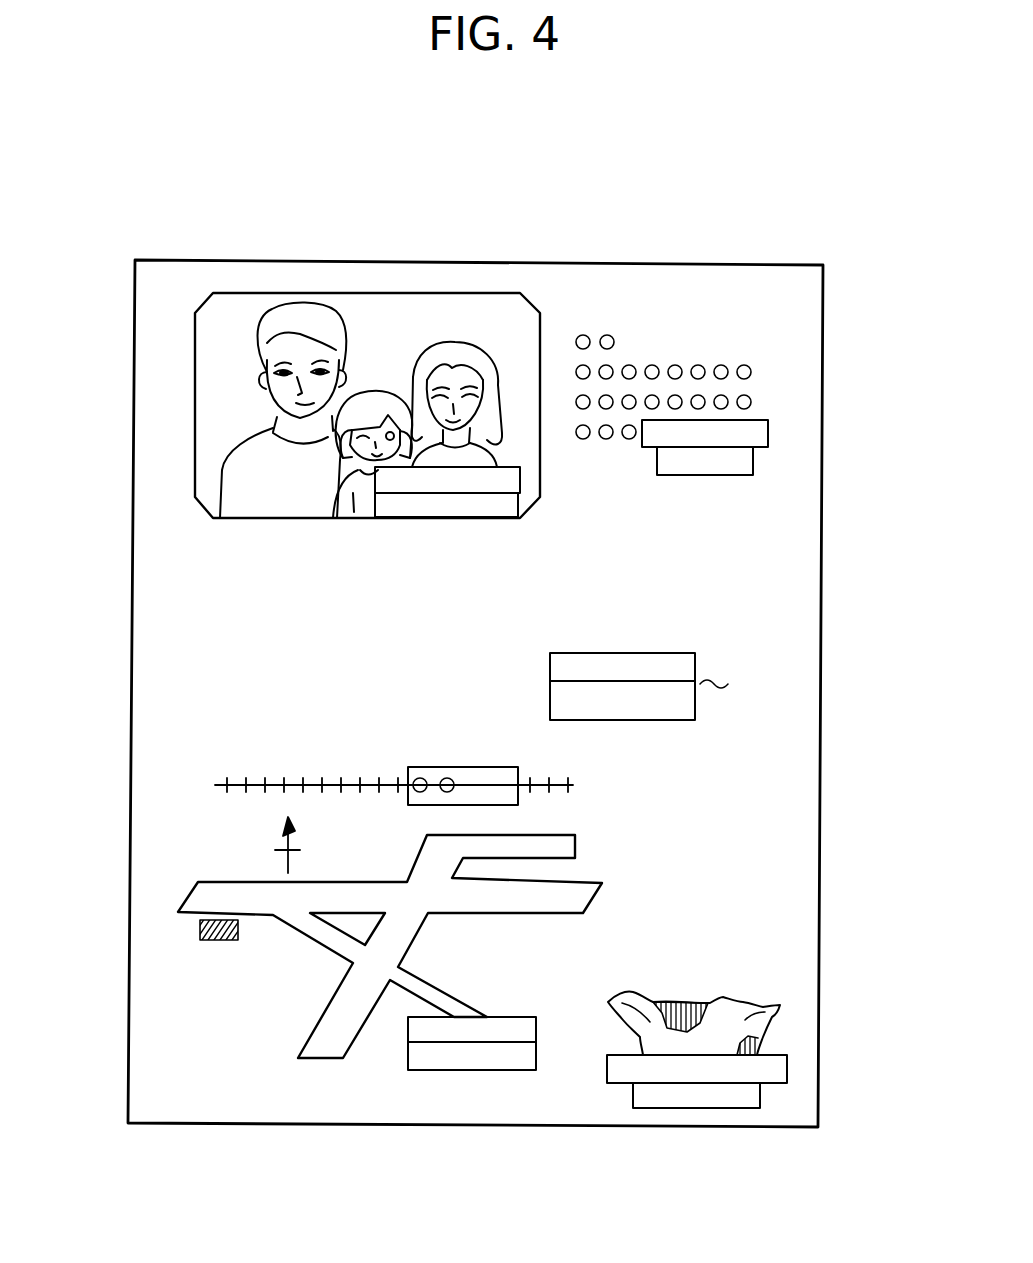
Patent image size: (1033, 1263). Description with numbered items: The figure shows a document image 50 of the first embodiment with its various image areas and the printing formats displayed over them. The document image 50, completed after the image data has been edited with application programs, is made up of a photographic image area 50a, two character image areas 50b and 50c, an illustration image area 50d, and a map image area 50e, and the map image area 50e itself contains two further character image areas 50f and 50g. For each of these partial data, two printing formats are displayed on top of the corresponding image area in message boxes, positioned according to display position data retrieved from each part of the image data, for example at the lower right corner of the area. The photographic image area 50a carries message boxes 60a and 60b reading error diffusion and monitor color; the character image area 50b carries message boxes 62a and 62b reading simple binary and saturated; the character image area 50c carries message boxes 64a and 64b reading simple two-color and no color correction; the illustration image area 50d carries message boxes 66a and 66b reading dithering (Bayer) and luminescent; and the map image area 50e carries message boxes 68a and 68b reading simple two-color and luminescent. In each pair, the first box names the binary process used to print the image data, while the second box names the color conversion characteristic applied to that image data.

The document image 50 is at (808, 262).
The photographic image area 50a is at (435, 292).
The character image area 50b is at (773, 328).
The character image area 50c is at (731, 718).
The illustration image area 50d is at (772, 1049).
The map image area 50e is at (328, 887).
The character image area 50f is at (458, 767).
The character image area 50g is at (183, 794).
The message box 60a is at (520, 482).
The message box 60b is at (518, 508).
The message box 62a is at (762, 448).
The message box 62b is at (740, 475).
The message box 64a is at (647, 653).
The message box 64b is at (646, 720).
The message box 66a is at (787, 1068).
The message box 66b is at (760, 1095).
The message box 68a is at (530, 1017).
The message box 68b is at (533, 1070).